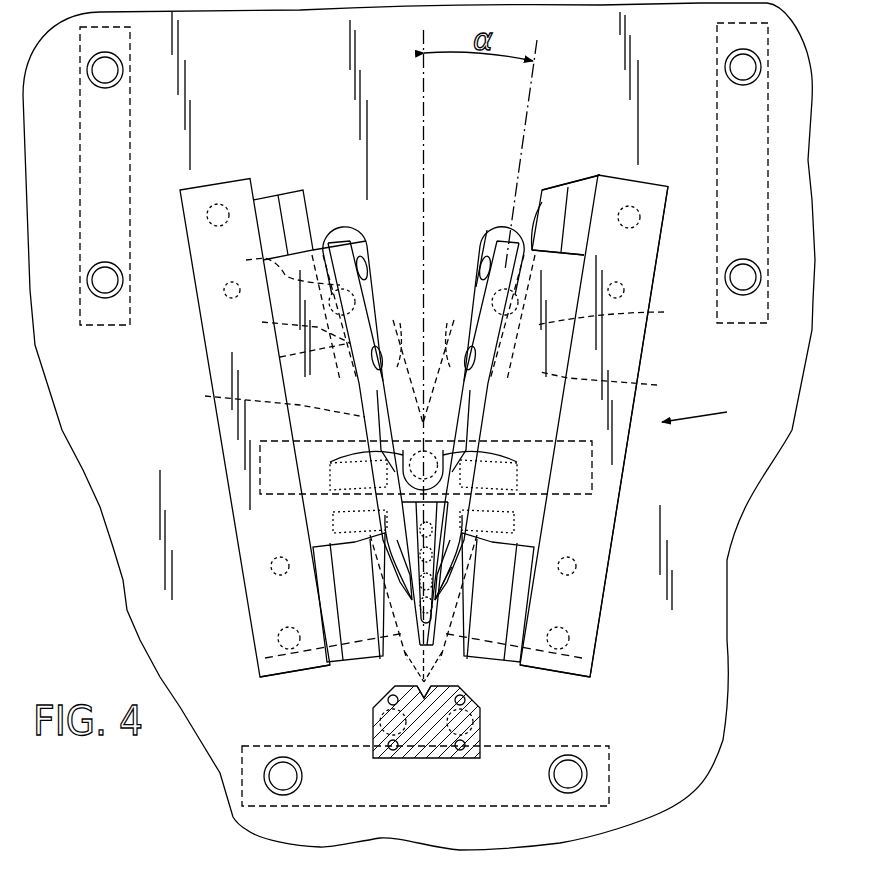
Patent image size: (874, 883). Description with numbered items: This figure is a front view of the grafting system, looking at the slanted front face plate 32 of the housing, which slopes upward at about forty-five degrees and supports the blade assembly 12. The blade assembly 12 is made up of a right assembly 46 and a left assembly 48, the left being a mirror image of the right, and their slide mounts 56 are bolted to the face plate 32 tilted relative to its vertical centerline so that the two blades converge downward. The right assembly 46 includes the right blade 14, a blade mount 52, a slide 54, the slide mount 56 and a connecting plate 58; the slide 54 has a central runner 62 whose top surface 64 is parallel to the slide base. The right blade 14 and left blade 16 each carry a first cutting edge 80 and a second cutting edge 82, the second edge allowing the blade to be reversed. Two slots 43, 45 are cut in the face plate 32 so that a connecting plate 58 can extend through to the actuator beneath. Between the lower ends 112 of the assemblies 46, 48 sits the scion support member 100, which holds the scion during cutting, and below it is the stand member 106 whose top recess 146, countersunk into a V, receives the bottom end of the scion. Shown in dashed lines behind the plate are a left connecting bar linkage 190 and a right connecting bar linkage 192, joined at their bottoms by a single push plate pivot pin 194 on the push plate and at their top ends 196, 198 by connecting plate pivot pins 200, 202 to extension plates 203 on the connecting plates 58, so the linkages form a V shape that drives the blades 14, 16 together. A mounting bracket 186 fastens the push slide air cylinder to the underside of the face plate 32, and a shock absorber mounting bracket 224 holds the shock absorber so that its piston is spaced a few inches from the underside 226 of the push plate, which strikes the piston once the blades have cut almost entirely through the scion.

The blade assembly 12 is at (705, 408).
The right blade 14 is at (546, 487).
The left blade 16 is at (302, 487).
The front face plate 32 is at (302, 72).
The slot 43 is at (340, 228).
The slot 45 is at (496, 233).
The right assembly 46 is at (645, 182).
The left assembly 48 is at (210, 186).
The blade mount 52 is at (570, 253).
The slide 54 is at (582, 198).
The slide mount 56 is at (648, 360).
The connecting plate 58 is at (487, 230).
The runner 62 is at (550, 188).
The top surface of the runner 64 is at (542, 202).
The first cutting edge 80 is at (452, 567).
The second cutting edge 82 is at (480, 385).
The scion support member 100 is at (413, 598).
The stand member 106 is at (477, 713).
The lower ends 112 is at (290, 678).
The recess 146 is at (434, 690).
The mounting bracket 186 is at (97, 330).
The left connecting bar linkage 190 is at (398, 332).
The right connecting bar linkage 192 is at (443, 332).
The push plate pivot pin 194 is at (258, 400).
The top end 196 is at (363, 288).
The top end 198 is at (476, 287).
The connecting plate pivot pin 200 is at (282, 334).
The connecting plate pivot pin 202 is at (621, 385).
The extension plates 203 is at (452, 288).
The shock absorber mounting bracket 224 is at (613, 770).
The underside 226 is at (594, 470).